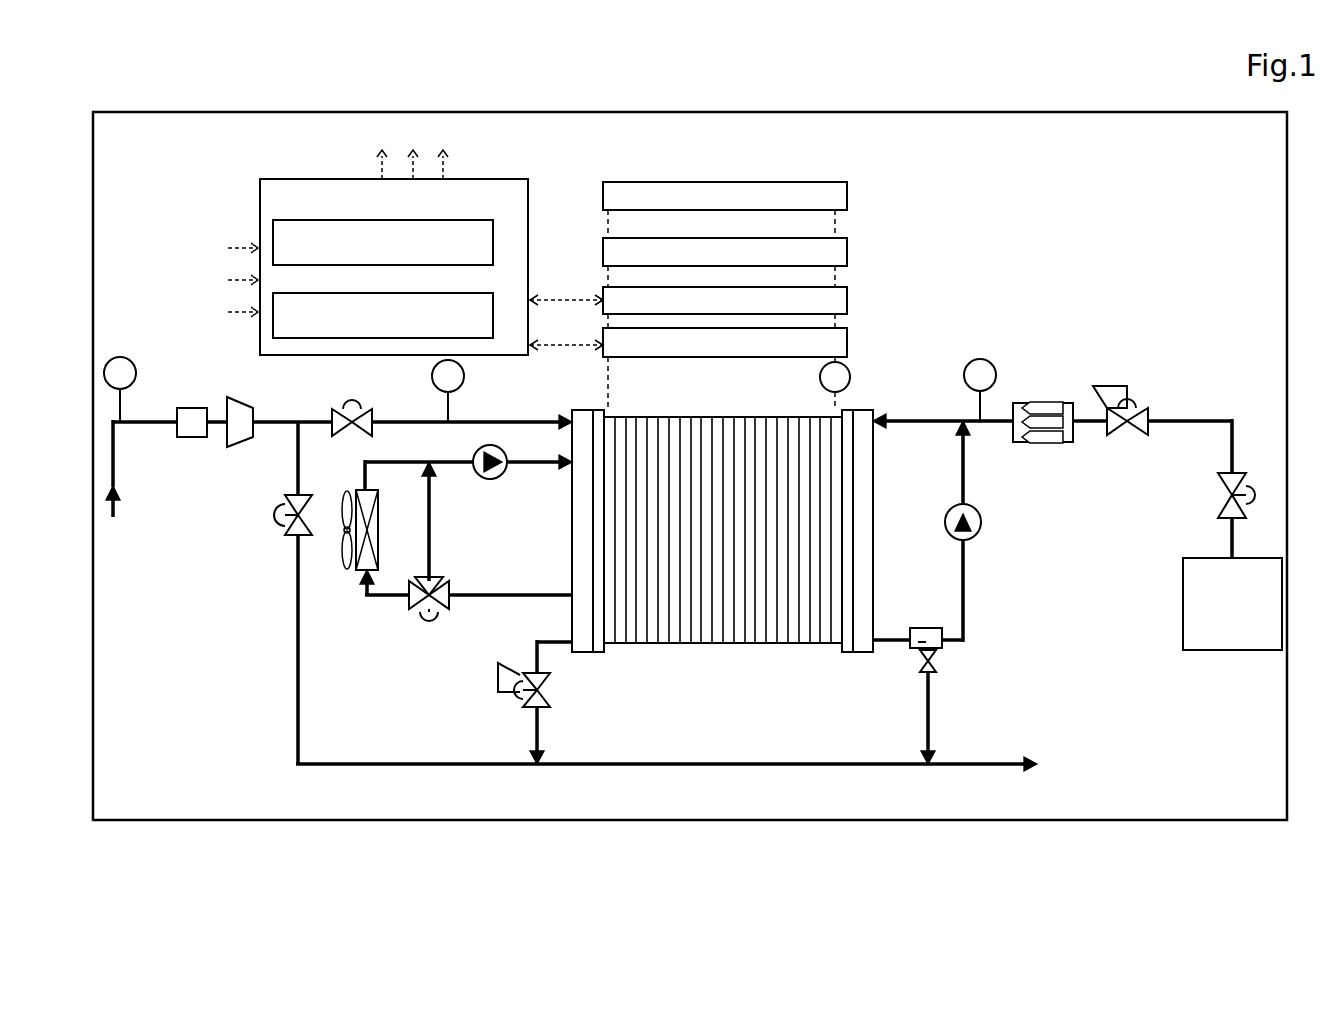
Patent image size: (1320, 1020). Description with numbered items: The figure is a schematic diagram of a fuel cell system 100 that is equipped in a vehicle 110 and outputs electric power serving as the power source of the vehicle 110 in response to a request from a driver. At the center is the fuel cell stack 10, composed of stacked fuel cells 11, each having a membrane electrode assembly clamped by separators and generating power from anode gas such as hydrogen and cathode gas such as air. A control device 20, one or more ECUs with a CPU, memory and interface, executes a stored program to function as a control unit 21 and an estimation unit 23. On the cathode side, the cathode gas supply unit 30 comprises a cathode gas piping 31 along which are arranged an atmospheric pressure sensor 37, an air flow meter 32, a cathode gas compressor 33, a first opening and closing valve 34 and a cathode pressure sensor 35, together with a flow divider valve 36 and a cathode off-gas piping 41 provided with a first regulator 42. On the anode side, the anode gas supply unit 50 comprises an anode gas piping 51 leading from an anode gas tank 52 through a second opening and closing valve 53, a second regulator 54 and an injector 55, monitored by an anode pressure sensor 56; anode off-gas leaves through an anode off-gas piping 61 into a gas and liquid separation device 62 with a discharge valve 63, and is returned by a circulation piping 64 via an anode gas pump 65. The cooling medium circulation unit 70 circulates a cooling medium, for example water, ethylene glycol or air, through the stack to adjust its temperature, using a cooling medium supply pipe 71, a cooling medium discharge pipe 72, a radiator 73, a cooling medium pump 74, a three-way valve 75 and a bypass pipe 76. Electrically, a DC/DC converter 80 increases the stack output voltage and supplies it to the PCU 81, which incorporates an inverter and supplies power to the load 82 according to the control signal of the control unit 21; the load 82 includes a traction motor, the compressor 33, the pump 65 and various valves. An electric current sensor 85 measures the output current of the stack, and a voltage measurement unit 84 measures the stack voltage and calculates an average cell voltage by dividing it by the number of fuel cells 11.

The fuel cell stack 10 is at (722, 564).
The fuel cells 11 is at (718, 652).
The control device 20 is at (398, 238).
The control unit 21 is at (495, 238).
The estimation unit 23 is at (495, 304).
The cathode gas supply unit 30 is at (250, 719).
The cathode gas piping 31 is at (113, 455).
The air flow meter 32 is at (198, 408).
The cathode gas compressor 33 is at (240, 397).
The first opening and closing valve 34 is at (361, 404).
The cathode pressure sensor 35 is at (464, 376).
The flow divider valve 36 is at (284, 520).
The atmospheric pressure sensor 37 is at (123, 358).
The cathode off-gas piping 41 is at (680, 766).
The first regulator 42 is at (516, 694).
The anode gas supply unit 50 is at (1171, 673).
The anode gas piping 51 is at (1234, 445).
The anode gas tank 52 is at (1250, 558).
The second opening and closing valve 53 is at (1220, 497).
The second regulator 54 is at (1150, 412).
The injector 55 is at (1047, 392).
The anode pressure sensor 56 is at (991, 364).
The anode off-gas piping 61 is at (893, 642).
The gas and liquid separation device 62 is at (934, 650).
The discharge valve 63 is at (932, 666).
The circulation piping 64 is at (962, 594).
The anode gas pump 65 is at (945, 520).
The cooling medium circulation unit 70 is at (383, 637).
The cooling medium supply pipe 71 is at (530, 466).
The cooling medium discharge pipe 72 is at (522, 598).
The radiator 73 is at (356, 490).
The cooling medium pump 74 is at (500, 476).
The three-way valve 75 is at (429, 622).
The bypass pipe 76 is at (431, 522).
The DC/DC converter 80 is at (848, 300).
The PCU 81 is at (848, 252).
The load 82 is at (848, 196).
The voltage measurement unit 84 is at (848, 344).
The electric current sensor 85 is at (820, 378).
The fuel cell system 100 is at (1140, 206).
The vehicle 110 is at (1140, 112).